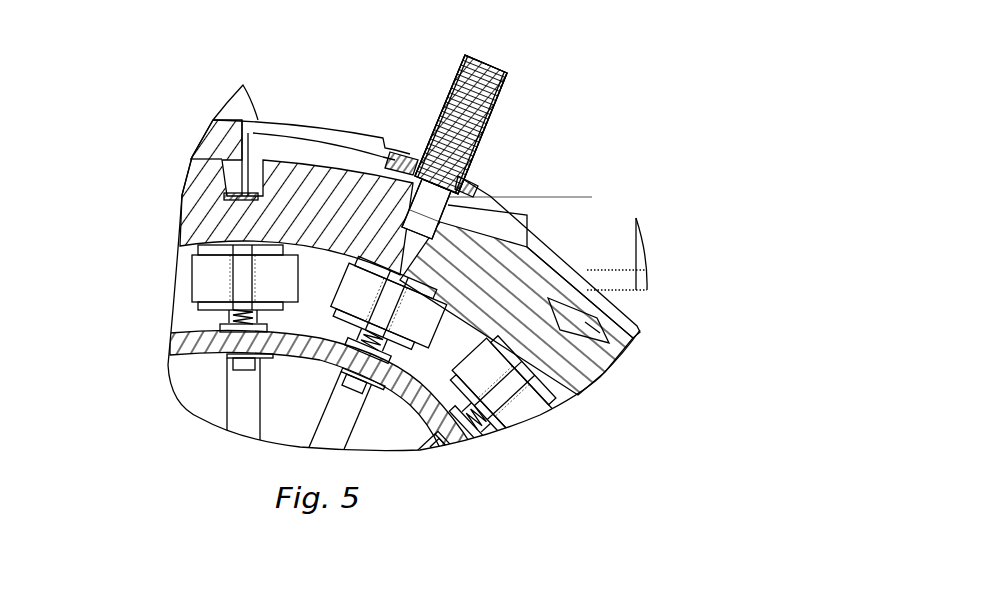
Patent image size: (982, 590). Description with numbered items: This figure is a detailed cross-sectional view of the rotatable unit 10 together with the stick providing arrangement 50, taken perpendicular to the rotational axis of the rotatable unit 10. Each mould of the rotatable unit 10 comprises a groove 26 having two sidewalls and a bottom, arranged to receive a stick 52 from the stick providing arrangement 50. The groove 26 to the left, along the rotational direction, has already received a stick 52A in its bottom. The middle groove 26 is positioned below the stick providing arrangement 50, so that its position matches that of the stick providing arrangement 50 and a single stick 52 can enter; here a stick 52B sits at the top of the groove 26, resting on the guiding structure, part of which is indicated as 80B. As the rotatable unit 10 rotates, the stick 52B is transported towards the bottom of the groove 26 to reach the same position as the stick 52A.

The rotatable unit 10 is at (567, 384).
The groove 26 is at (237, 174).
The stick providing arrangement 50 is at (478, 156).
The stick 52 is at (480, 103).
The stick 52A is at (237, 200).
The stick 52B is at (421, 197).
The flange 80B is at (355, 589).